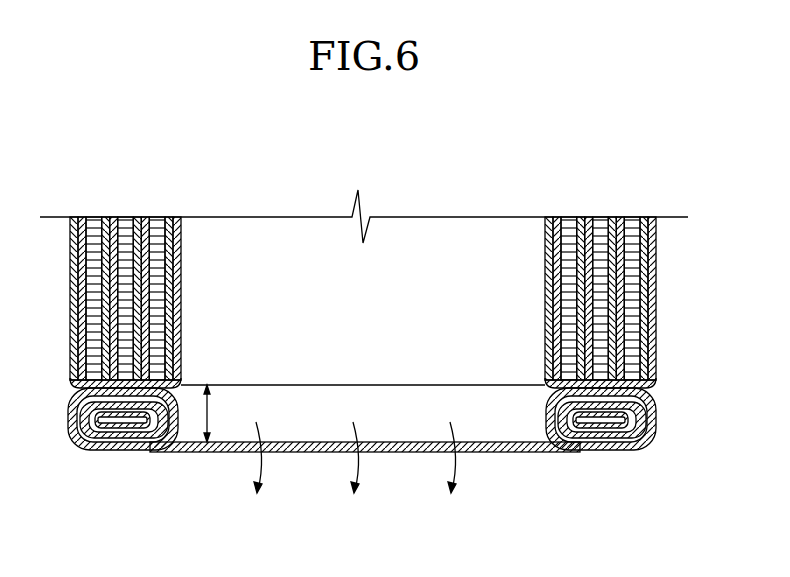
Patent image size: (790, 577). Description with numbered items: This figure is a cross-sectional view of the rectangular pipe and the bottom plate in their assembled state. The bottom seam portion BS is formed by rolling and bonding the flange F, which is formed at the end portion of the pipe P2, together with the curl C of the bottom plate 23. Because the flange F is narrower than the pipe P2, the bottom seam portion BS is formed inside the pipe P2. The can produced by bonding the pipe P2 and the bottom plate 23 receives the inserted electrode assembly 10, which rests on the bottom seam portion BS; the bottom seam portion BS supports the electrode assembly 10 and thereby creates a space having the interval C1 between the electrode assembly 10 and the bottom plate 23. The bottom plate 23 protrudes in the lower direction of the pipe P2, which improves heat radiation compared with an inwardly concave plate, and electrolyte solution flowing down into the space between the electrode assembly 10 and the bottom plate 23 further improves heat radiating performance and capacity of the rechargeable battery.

The electrode assembly 10 is at (151, 263).
The pipe P2 is at (654, 270).
The flange F is at (73, 405).
The curl C is at (102, 436).
The interval C1 is at (224, 413).
The bottom seam portion BS is at (657, 420).
The bottom plate 23 is at (515, 448).